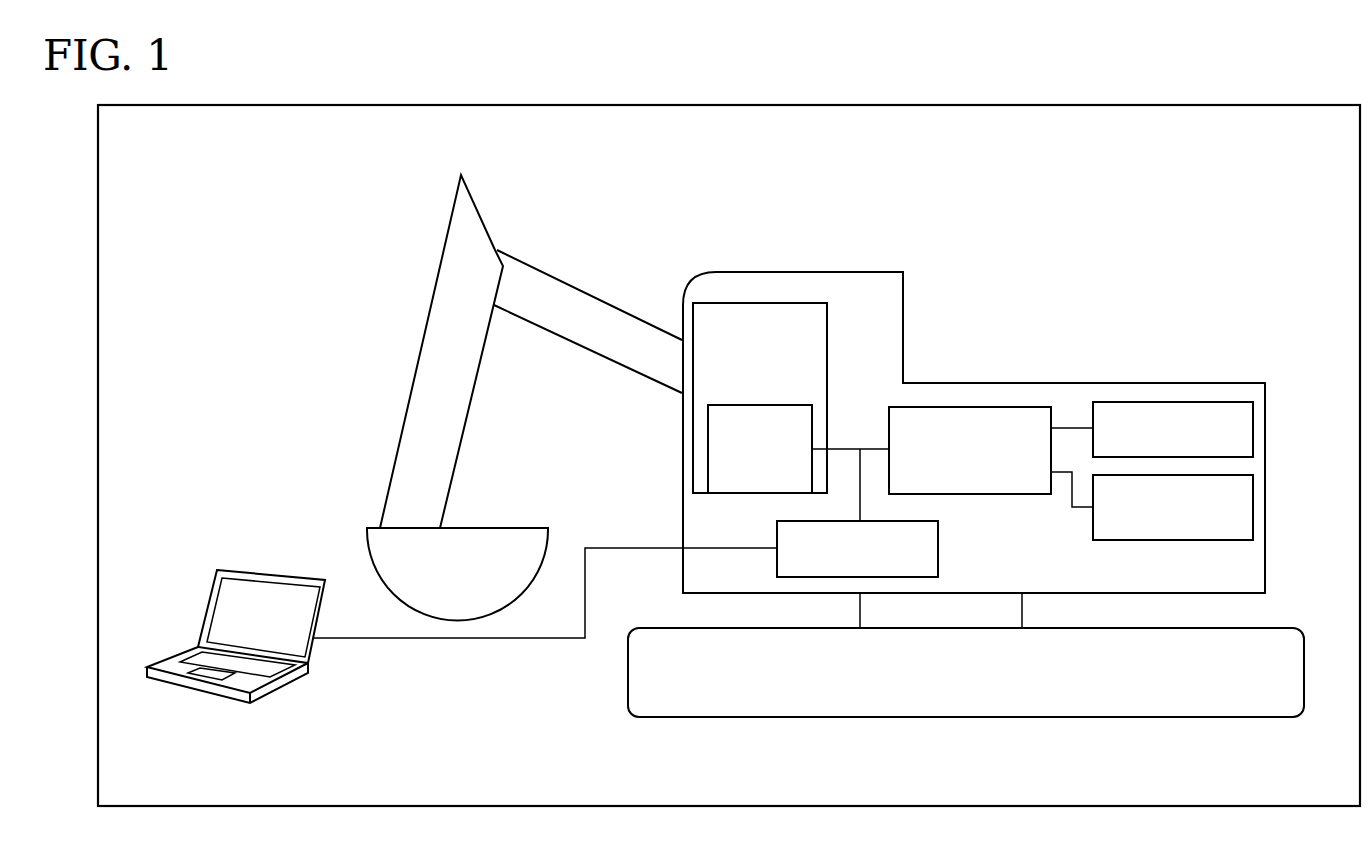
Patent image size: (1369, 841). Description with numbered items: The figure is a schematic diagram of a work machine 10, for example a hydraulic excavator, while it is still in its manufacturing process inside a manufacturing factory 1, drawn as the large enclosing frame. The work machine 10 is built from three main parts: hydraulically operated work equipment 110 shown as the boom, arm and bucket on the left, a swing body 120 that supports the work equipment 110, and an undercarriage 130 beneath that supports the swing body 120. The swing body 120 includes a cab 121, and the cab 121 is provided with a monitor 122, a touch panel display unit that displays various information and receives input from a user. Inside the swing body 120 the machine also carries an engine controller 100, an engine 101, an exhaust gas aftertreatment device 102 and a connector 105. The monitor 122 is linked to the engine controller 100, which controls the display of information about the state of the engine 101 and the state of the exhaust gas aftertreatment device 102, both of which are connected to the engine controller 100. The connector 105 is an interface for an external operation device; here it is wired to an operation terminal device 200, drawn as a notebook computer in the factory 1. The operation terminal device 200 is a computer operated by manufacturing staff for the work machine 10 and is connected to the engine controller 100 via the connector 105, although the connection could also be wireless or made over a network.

The manufacturing factory 1 is at (1103, 105).
The work machine 10 is at (1137, 298).
The work equipment 110 is at (413, 396).
The swing body 120 is at (1152, 383).
The cab 121 is at (827, 340).
The monitor 122 is at (765, 405).
The engine controller 100 is at (989, 407).
The engine 101 is at (1253, 428).
The exhaust gas aftertreatment device 102 is at (1253, 507).
The connector 105 is at (938, 548).
The undercarriage 130 is at (860, 717).
The operation terminal device 200 is at (272, 573).